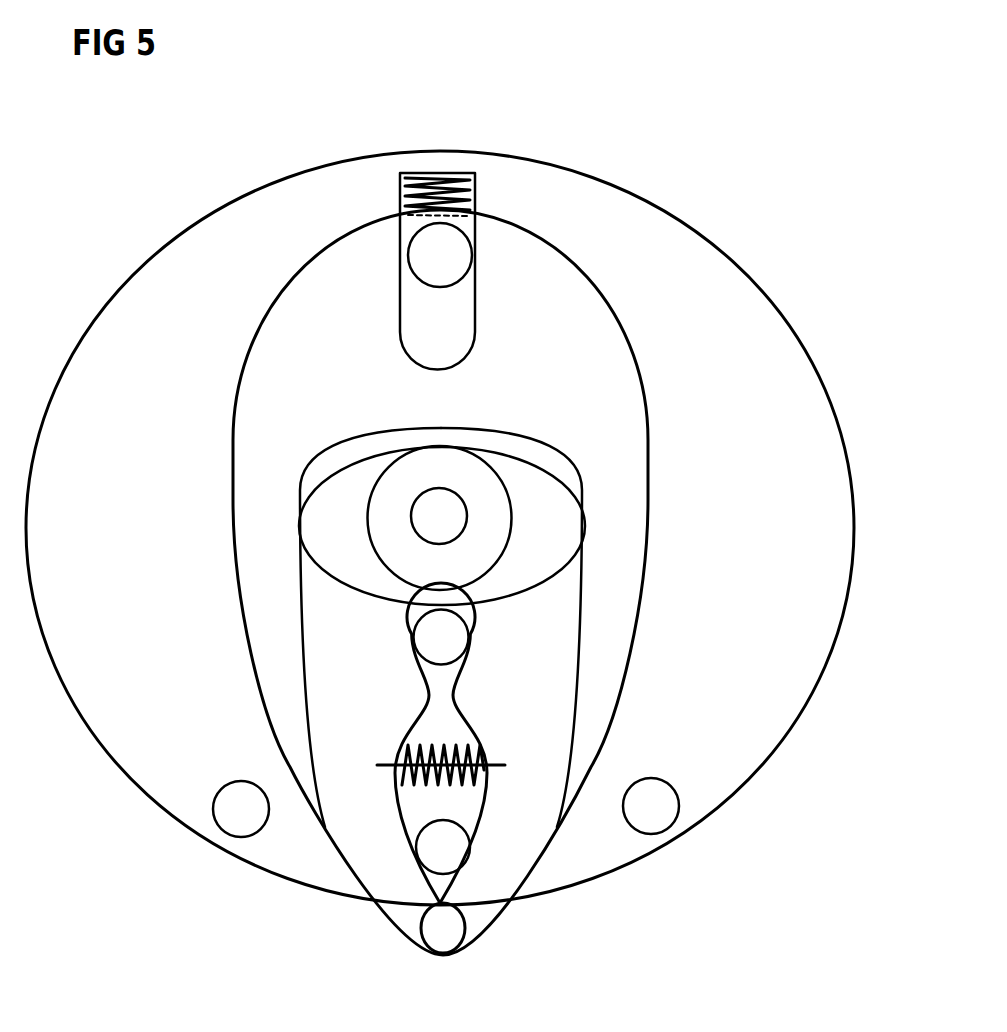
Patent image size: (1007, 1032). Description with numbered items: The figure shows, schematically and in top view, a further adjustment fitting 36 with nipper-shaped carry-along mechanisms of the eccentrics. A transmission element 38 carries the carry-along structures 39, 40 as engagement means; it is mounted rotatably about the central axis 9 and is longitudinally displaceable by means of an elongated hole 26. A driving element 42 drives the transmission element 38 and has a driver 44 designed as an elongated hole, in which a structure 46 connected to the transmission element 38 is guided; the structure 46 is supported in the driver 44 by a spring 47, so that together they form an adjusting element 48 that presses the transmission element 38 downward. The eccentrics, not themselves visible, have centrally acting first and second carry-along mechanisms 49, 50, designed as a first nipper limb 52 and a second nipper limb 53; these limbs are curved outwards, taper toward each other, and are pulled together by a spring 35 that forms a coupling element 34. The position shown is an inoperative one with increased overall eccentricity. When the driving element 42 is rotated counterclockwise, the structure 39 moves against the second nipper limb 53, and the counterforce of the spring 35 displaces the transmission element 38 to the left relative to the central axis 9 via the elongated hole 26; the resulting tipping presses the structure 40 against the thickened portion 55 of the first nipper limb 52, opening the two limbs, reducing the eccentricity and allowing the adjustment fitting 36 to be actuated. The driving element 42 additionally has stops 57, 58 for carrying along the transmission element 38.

The adjustment fitting 36 is at (451, 455).
The driving element 42 is at (165, 300).
The transmission element 38 is at (590, 375).
The first carry-along mechanism 49 is at (303, 688).
The second carry-along mechanism 50 is at (587, 647).
The elongated hole 26 is at (303, 477).
The central axis 9 is at (440, 517).
The adjusting element 48 is at (495, 230).
The driver 44 is at (400, 318).
The spring 47 is at (438, 175).
The structure 46 is at (447, 255).
The thickened portion 55 is at (463, 705).
The carry-along structure 40 is at (435, 633).
The second nipper limb 53 is at (530, 728).
The coupling element 34 is at (442, 846).
The carry-along structure 39 is at (418, 795).
The spring 35 is at (490, 773).
The first nipper limb 52 is at (348, 783).
The stop 57 is at (237, 812).
The stop 58 is at (655, 808).